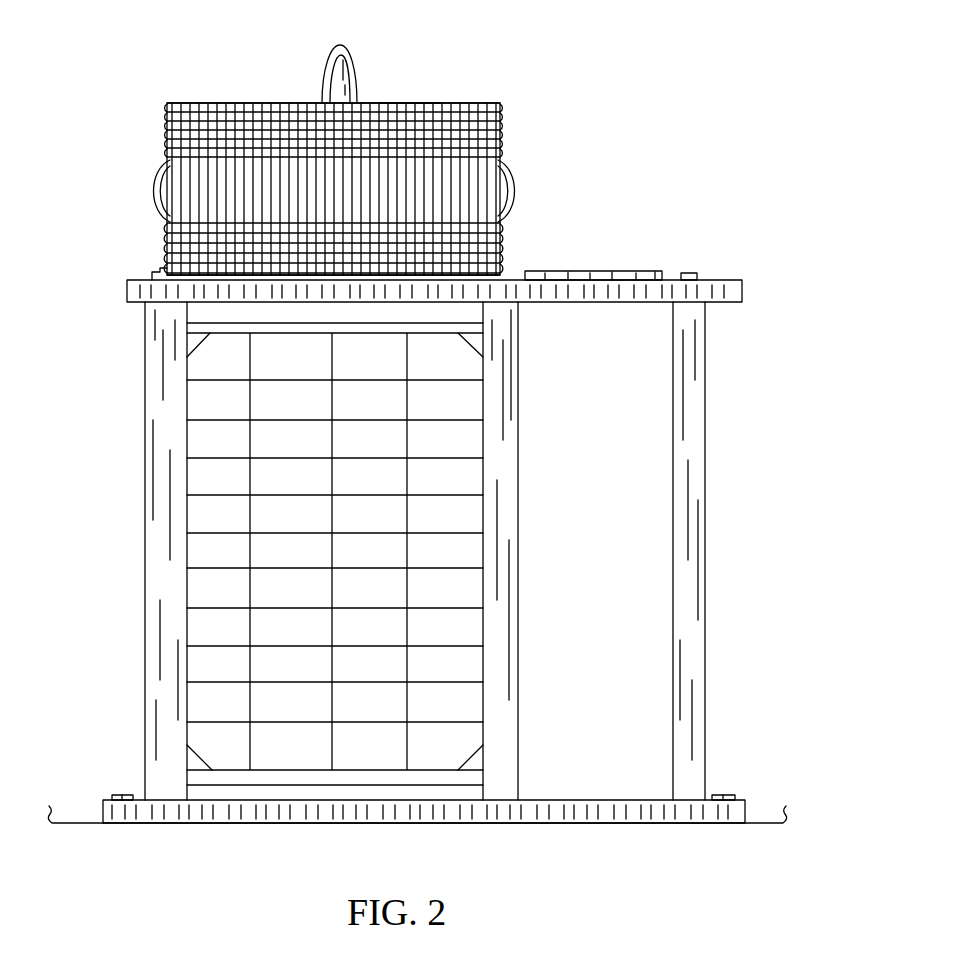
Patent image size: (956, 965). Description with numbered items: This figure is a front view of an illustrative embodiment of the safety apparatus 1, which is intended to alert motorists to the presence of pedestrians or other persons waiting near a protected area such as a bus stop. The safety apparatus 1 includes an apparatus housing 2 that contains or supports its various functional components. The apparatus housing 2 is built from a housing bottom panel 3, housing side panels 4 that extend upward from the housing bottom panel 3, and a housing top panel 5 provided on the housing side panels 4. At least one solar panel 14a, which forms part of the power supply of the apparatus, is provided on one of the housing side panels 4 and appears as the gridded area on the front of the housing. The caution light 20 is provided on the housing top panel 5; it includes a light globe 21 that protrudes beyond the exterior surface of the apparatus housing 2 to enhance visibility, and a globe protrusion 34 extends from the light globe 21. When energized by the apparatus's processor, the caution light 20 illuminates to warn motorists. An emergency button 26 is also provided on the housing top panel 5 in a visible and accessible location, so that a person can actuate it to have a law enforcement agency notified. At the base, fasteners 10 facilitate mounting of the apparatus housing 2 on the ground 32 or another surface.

The safety apparatus 1 is at (162, 55).
The apparatus housing 2 is at (142, 428).
The housing bottom panel 3 is at (254, 805).
The housing side panels 4 is at (205, 310).
The housing top panel 5 is at (129, 290).
The fasteners 10 is at (114, 795).
The solar panel 14a is at (453, 445).
The caution light 20 is at (464, 99).
The light globe 21 is at (400, 105).
The emergency button 26 is at (603, 272).
The ground 32 is at (765, 823).
The globe protrusion 34 is at (336, 95).